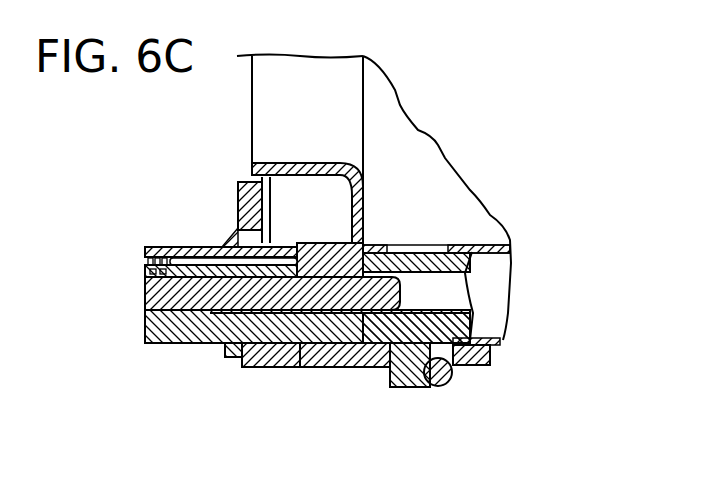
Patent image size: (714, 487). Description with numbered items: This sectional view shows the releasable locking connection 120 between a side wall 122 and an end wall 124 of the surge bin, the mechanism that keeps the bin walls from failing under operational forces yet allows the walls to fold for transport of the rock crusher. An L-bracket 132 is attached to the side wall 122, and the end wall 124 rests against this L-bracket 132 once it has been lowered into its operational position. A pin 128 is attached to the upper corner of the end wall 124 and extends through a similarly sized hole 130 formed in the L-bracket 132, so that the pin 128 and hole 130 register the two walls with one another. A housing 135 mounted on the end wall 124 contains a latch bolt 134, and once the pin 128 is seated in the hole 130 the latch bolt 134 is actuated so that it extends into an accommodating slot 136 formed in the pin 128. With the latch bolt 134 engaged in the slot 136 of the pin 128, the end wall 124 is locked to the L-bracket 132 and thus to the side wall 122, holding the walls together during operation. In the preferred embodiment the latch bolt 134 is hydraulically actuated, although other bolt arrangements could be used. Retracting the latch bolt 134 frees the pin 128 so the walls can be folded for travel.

The connector assembly 120 is at (281, 409).
The side wall 122 is at (277, 100).
The end wall 124 is at (492, 272).
The pin 128 is at (393, 383).
The hole 130 is at (432, 388).
The L-bracket 132 is at (318, 367).
The latch bolt 134 is at (247, 367).
The housing 135 is at (183, 247).
The slot 136 is at (447, 290).